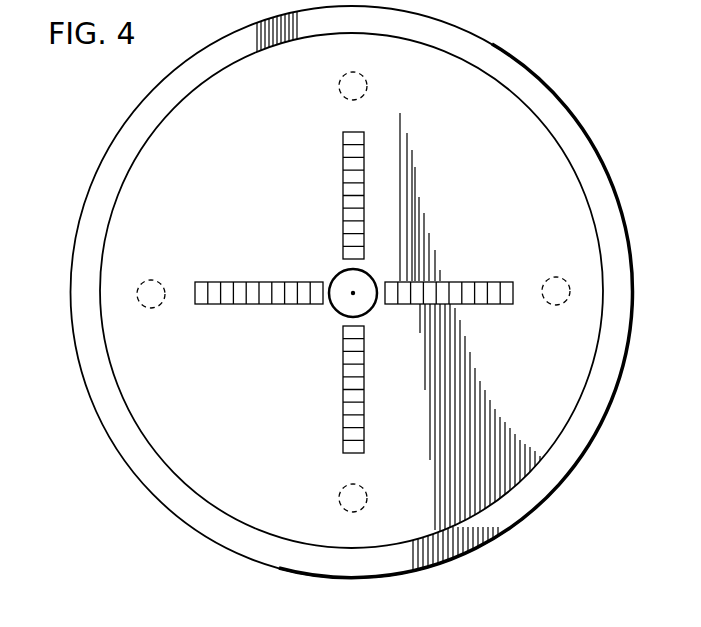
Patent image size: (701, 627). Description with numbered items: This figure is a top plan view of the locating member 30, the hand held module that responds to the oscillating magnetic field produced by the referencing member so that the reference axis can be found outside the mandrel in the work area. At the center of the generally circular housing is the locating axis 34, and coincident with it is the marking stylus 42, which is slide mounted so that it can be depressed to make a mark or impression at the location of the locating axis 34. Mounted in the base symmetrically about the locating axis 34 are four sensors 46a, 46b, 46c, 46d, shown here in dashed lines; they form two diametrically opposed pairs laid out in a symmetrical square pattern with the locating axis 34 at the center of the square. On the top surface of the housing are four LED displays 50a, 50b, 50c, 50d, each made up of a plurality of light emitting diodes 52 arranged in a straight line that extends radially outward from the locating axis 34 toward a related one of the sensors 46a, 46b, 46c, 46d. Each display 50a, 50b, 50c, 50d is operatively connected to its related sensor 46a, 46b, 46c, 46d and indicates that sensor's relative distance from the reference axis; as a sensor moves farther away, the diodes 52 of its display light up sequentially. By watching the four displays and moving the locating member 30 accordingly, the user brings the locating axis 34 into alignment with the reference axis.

The locating member 30 is at (531, 63).
The locating axis 34 is at (350, 294).
The marking stylus 42 is at (333, 305).
The sensor 46a is at (160, 281).
The sensor 46b is at (547, 279).
The sensor 46c is at (368, 83).
The sensor 46d is at (338, 495).
The LED display 50a is at (225, 304).
The LED display 50b is at (505, 304).
The LED display 50c is at (343, 155).
The LED display 50d is at (343, 419).
The light emitting diodes 52 is at (343, 228).